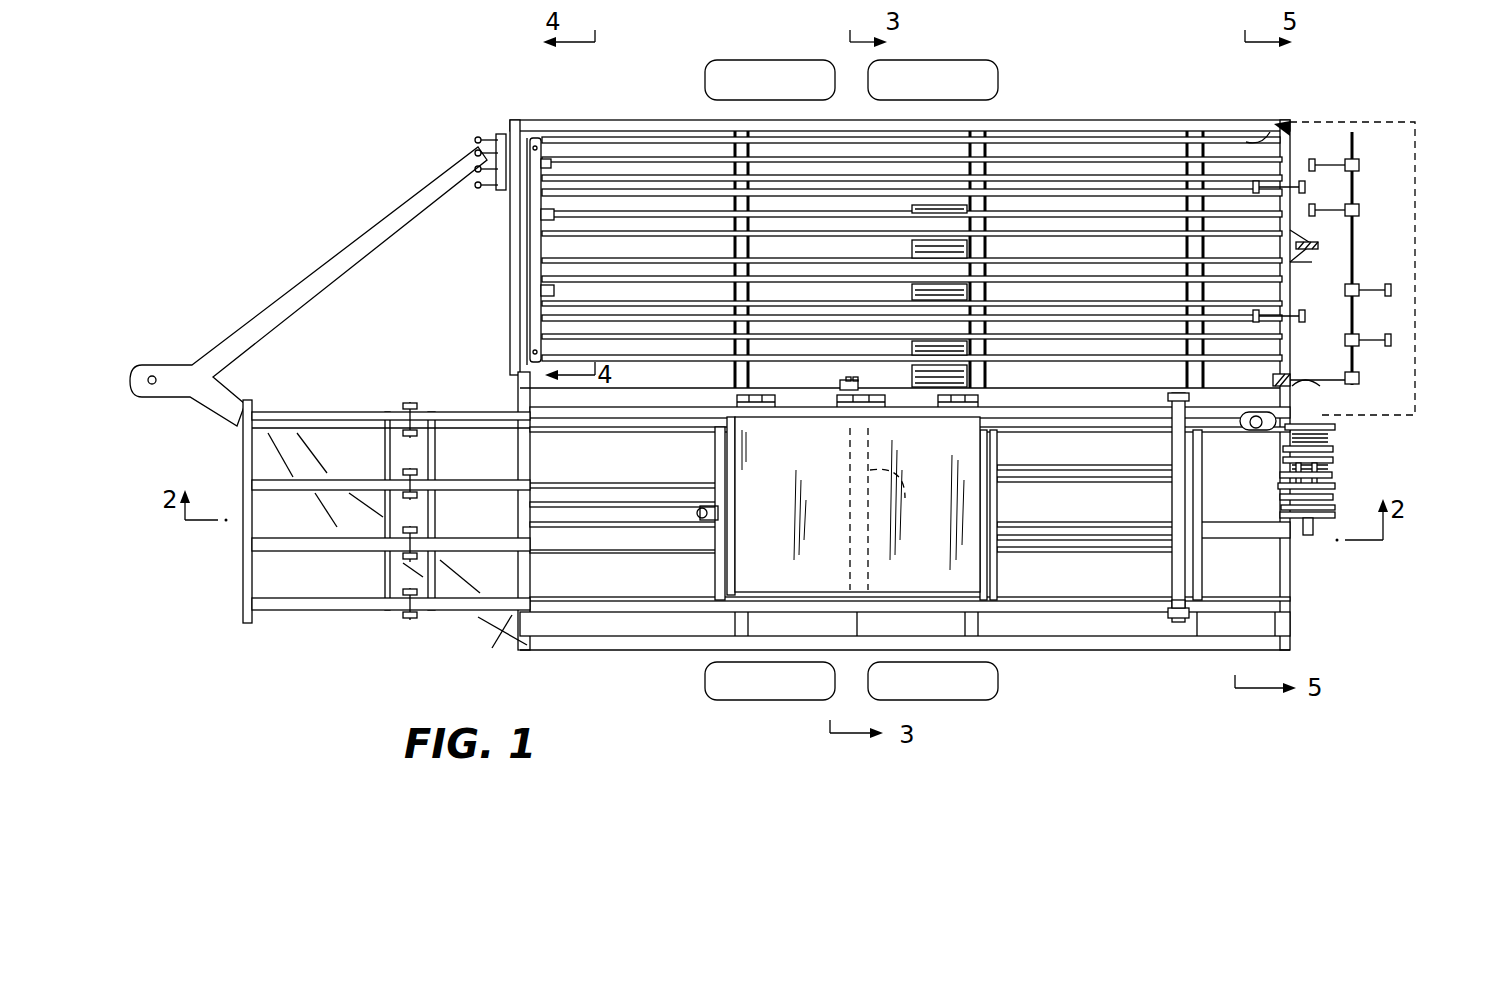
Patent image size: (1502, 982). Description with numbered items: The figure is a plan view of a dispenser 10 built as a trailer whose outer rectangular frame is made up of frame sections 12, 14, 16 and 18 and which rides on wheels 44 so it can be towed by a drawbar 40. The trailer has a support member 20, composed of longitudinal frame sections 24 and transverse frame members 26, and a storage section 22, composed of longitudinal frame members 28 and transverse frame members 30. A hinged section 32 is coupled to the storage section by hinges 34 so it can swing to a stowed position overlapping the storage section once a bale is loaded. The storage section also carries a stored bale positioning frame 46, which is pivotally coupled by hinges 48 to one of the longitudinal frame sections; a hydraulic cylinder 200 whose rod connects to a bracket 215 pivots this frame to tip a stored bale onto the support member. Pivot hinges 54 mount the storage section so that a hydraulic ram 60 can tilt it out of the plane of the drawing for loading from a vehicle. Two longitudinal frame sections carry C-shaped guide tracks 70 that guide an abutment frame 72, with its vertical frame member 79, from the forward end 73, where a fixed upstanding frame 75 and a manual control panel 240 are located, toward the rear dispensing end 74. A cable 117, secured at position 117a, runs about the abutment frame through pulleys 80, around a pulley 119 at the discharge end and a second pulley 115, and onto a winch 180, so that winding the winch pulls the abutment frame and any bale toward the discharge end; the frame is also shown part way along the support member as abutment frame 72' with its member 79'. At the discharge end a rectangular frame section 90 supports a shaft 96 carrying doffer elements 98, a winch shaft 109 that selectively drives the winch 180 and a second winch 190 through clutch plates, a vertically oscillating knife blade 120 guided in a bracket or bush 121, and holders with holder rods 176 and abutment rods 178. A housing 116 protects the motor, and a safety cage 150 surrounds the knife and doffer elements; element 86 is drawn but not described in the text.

The dispenser 10 is at (1118, 112).
The rectangular frame section 12 is at (1085, 636).
The rectangular frame section 14 is at (518, 620).
The rectangular frame section 16 is at (1010, 120).
The rectangular frame section 18 is at (1290, 628).
The support member 20 is at (1048, 170).
The storage section 22 is at (680, 580).
The longitudinal frame sections 24 is at (700, 180).
The transverse frame members 26 is at (745, 245).
The longitudinal frame members 28 is at (605, 484).
The transverse frame members 30 is at (432, 462).
The hinged section 32 is at (346, 620).
The hinges 34 is at (410, 400).
The drawbar 40 is at (356, 240).
The wheels 44 is at (752, 72).
The stored bale positioning frame 46 is at (784, 524).
The hinges 48 is at (780, 425).
The pivot hinges 54 is at (1175, 437).
The hydraulic ram 60 is at (704, 520).
The C-shaped guide tracks 70 is at (912, 222).
The abutment frame 72 is at (499, 229).
The abutment frame 72' is at (912, 268).
The forward end 73 is at (640, 192).
The rear dispensing end 74 is at (1222, 156).
The fixed upstanding frame 75 is at (512, 252).
The vertical frame member 79 is at (499, 298).
The vertical frame member 79' is at (570, 118).
The pulleys 80 is at (530, 138).
The rod 86 is at (530, 316).
The frame section 90 is at (1293, 125).
The shaft 96 is at (1392, 342).
The doffer elements 98 is at (1392, 290).
The winch shaft 109 is at (1292, 478).
The second pulley 115 is at (1258, 430).
The housing 116 is at (1040, 345).
The cable 117 is at (690, 137).
The position 117a is at (1270, 142).
The pulley 119 is at (1315, 390).
The knife blade 120 is at (1318, 246).
The bracket or bush 121 is at (1300, 261).
The safety cage 150 is at (1418, 122).
The holder rod 176 is at (1306, 187).
The abutment rod 178 is at (1250, 240).
The winch 180 is at (1330, 435).
The second winch 190 is at (1340, 490).
The hydraulic cylinder 200 is at (890, 490).
The bracket 215 is at (838, 382).
The manual control panel 240 is at (471, 138).